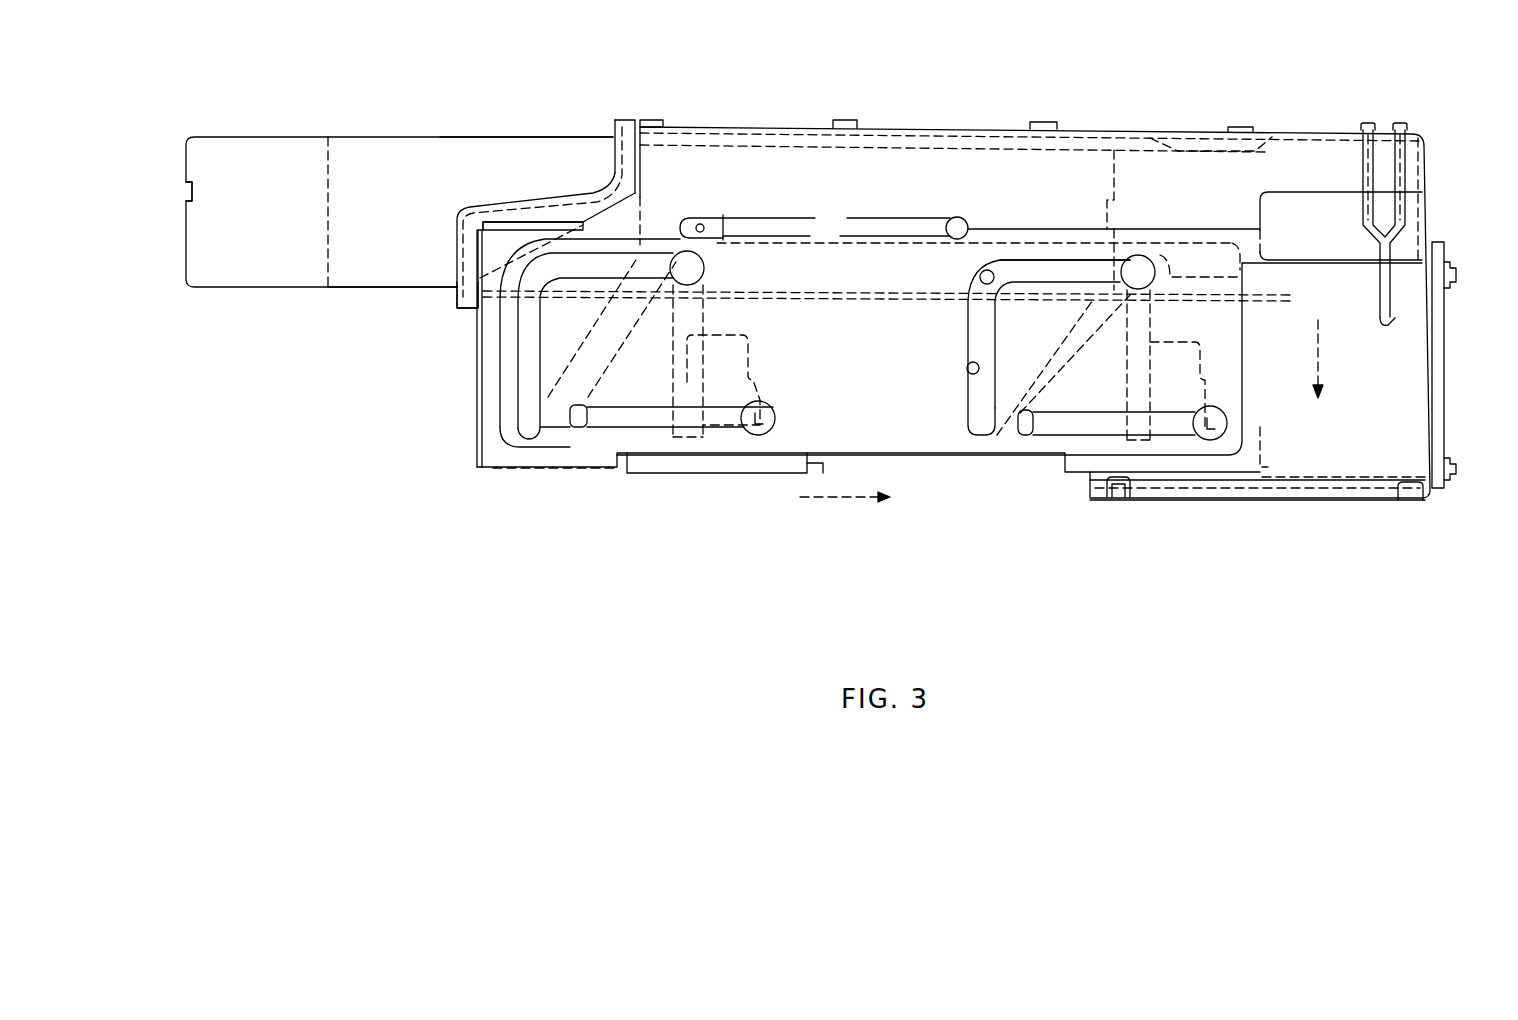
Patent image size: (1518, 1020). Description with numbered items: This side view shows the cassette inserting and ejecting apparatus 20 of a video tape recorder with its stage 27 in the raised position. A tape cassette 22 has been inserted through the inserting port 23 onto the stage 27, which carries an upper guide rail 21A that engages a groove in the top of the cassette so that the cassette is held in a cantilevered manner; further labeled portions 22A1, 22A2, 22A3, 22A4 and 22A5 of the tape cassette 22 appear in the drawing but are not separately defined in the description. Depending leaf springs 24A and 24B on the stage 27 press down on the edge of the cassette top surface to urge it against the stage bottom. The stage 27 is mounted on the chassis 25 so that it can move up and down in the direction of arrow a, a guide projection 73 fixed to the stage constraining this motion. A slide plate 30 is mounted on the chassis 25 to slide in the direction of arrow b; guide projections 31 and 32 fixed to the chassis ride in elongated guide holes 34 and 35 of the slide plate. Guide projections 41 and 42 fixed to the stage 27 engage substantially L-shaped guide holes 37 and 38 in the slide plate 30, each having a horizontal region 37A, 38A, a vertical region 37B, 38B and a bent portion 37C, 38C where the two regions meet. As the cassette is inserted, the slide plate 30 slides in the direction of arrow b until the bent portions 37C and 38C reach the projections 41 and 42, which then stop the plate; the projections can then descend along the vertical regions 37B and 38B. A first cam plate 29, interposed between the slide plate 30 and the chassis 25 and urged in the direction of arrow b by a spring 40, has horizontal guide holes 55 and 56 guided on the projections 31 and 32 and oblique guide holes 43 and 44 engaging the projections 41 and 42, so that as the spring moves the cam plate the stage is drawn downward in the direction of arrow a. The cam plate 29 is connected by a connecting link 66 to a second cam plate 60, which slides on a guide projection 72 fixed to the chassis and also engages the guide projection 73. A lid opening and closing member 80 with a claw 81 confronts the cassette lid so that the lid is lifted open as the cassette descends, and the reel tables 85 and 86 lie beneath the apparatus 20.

The cassette inserting and ejecting apparatus 20 is at (326, 57).
The tape cassette 22 is at (420, 136).
The upper surface of cartridge 22A1 is at (505, 136).
The lower surface of cartridge 22A2 is at (374, 288).
The rear end portion of cartridge 22A3 is at (1115, 180).
The front end portion of cartridge 22A4 is at (180, 272).
The side portion of cartridge 22A5 is at (275, 272).
The inserting port 23 is at (626, 119).
The depending leaf spring 24A is at (708, 148).
The depending leaf spring 24B is at (1160, 137).
The upper guide rail 21A is at (1273, 136).
The stage 27 is at (1305, 164).
The L-shaped guide hole 37 is at (530, 300).
The horizontal region of guide hole 37A is at (638, 206).
The vertical region of guide hole 37B is at (508, 360).
The bent portion of guide hole 37C is at (506, 331).
The first cam plate 29 is at (660, 233).
The spring 40 is at (895, 217).
The guide projection 41 is at (705, 268).
The guide projection 42 is at (1152, 286).
The L-shaped guide hole 38 is at (960, 330).
The horizontal region of guide hole 38A is at (1067, 280).
The vertical region of guide hole 38B is at (966, 368).
The bent portion of guide hole 38C is at (980, 278).
The slide plate 30 is at (1243, 330).
The reel table 86 is at (1206, 344).
The reel table 85 is at (765, 368).
The oblique guide hole 43 is at (636, 336).
The oblique guide hole 44 is at (1086, 343).
The guide projection 31 is at (777, 418).
The guide projection 32 is at (1229, 413).
The guide hole 55 is at (574, 428).
The elongated guide hole 34 is at (728, 430).
The guide hole 56 is at (1027, 436).
The elongated guide hole 35 is at (1060, 436).
The connecting link 66 is at (1218, 500).
The chassis 25 is at (1378, 464).
The lid opening and closing member 80 is at (1403, 212).
The claw 81 is at (1383, 320).
The second cam plate 60 is at (1445, 360).
The guide projection 73 is at (1453, 272).
The guide projection 72 is at (1452, 480).
The arrow a is at (1320, 350).
The arrow b is at (818, 498).